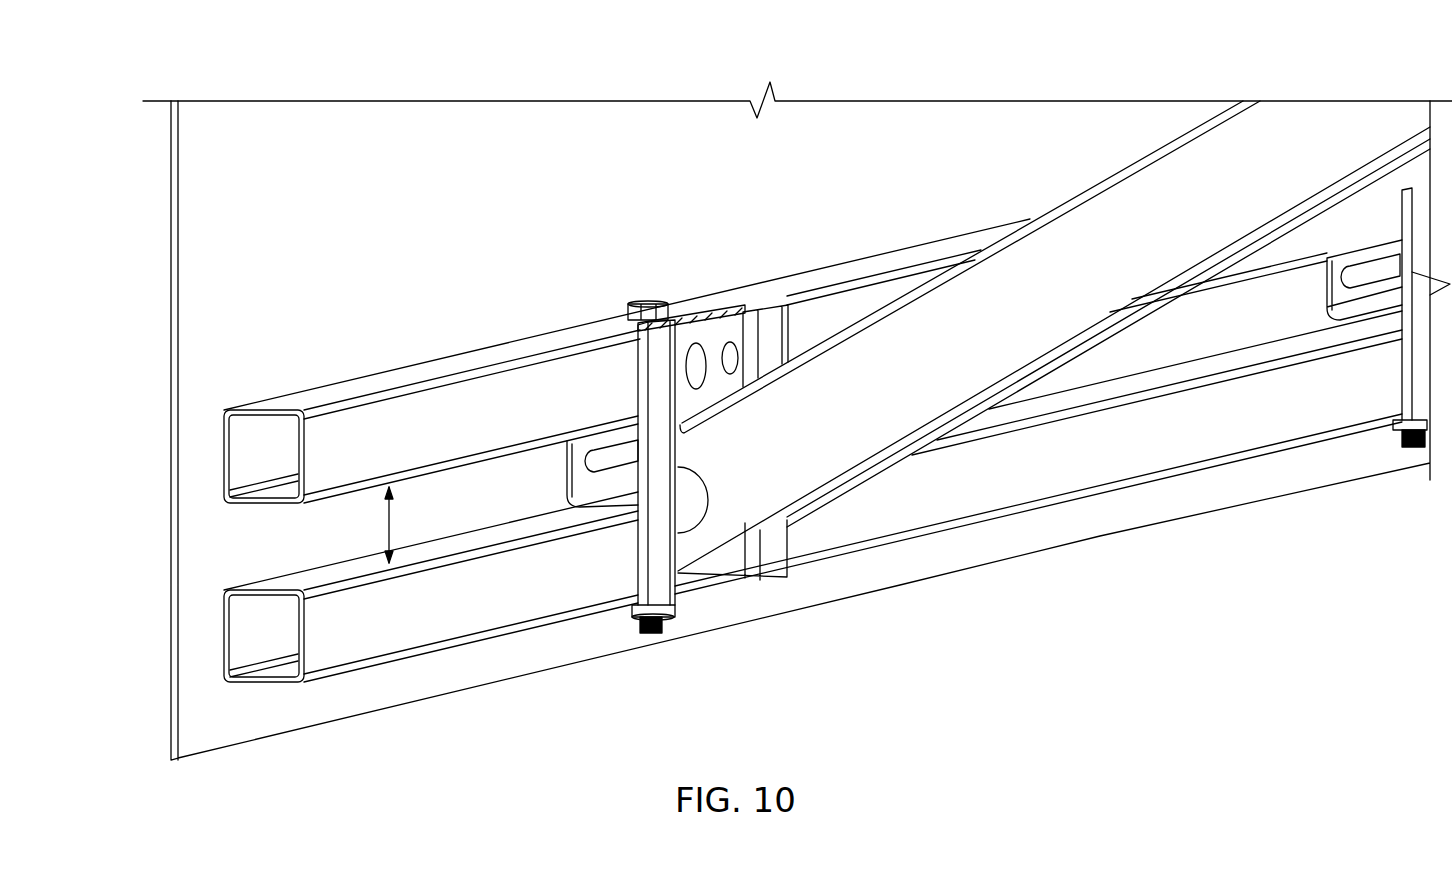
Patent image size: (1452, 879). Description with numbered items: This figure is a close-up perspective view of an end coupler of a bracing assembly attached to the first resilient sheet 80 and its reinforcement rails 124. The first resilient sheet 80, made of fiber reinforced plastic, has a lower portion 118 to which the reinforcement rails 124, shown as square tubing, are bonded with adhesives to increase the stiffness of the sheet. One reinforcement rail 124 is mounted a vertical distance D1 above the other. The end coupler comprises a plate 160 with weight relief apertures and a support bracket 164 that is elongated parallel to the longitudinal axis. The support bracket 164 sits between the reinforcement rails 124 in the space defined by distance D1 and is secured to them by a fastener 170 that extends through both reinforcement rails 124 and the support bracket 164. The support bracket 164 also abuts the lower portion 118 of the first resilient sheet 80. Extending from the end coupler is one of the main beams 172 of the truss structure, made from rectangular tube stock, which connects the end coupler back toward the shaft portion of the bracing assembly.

The first resilient sheet 80 is at (462, 138).
The lower portion 118 is at (171, 342).
The reinforcement rails 124 is at (240, 450).
The vertical distance D1 is at (389, 522).
The plate 160 is at (725, 577).
The support bracket 164 is at (598, 512).
The fastener 170 is at (650, 300).
The main beams 172 is at (867, 462).